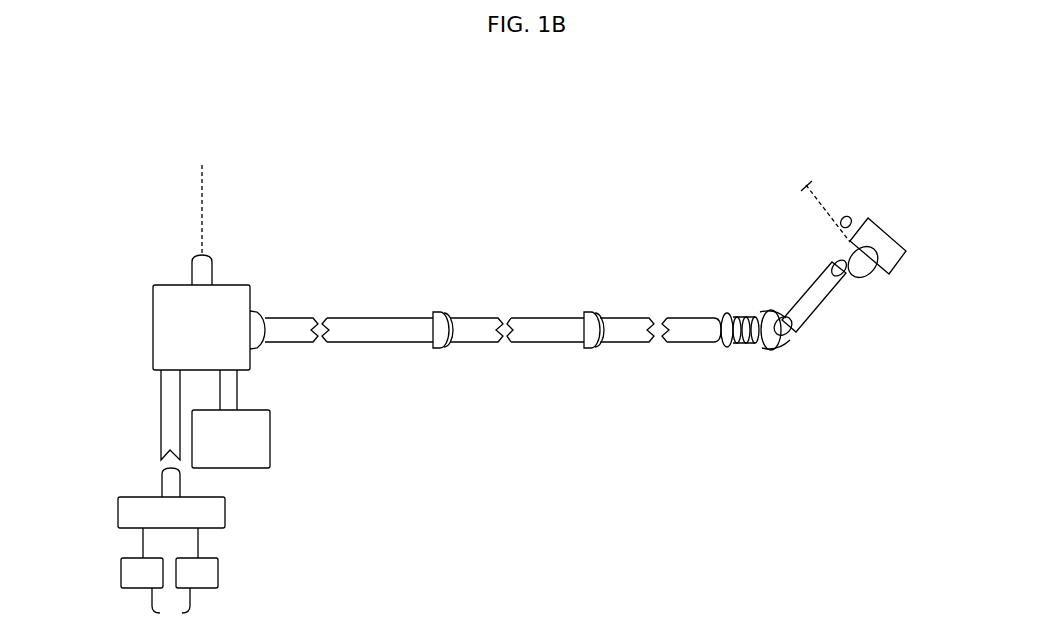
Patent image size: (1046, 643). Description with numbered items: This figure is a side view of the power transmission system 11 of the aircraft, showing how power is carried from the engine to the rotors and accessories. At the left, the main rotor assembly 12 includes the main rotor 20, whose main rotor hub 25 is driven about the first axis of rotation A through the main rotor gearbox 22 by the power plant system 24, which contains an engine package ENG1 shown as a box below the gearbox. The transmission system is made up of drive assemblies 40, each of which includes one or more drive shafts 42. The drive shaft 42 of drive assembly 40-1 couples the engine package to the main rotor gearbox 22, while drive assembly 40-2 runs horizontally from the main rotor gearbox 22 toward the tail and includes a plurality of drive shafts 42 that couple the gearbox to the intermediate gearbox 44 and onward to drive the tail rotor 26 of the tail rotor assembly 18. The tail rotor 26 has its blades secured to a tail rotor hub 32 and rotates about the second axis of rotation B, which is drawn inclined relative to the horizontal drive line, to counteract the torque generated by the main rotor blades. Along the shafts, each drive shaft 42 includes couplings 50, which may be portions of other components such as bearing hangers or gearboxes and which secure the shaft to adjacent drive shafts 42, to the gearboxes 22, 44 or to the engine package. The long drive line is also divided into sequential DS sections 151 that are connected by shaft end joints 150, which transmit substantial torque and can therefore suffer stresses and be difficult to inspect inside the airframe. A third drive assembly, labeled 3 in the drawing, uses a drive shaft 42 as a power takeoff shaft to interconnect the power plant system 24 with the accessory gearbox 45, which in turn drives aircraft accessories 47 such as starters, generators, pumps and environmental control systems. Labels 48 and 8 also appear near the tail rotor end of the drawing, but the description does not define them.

The power transmission system 11 is at (134, 127).
The main rotor assembly 12 is at (117, 172).
The main rotor 20 is at (152, 264).
The first axis of rotation A is at (205, 196).
The main rotor hub 25 is at (213, 268).
The main rotor gearbox 22 is at (240, 287).
The section / component 3 is at (126, 394).
The coupling 50 is at (265, 318).
The drive shaft (DS) 42 is at (161, 408).
The drive assembly 40 is at (326, 357).
The drive assembly 40-1 is at (292, 396).
The drive assembly 40-2 is at (417, 220).
The power plant system 24 is at (301, 432).
The accessory gearbox 45 is at (225, 515).
The accessories 47 is at (171, 607).
The shaft end joints 150 is at (588, 346).
The DS sections 151 is at (641, 328).
The intermediate gearbox 44 is at (776, 352).
The tail rotor assembly 18 is at (755, 216).
The second axis of rotation B is at (820, 196).
The tail rotor 26 is at (888, 226).
The tail rotor hub 32 is at (849, 220).
The mounting flange 48 is at (893, 268).
The tool 8 is at (840, 179).